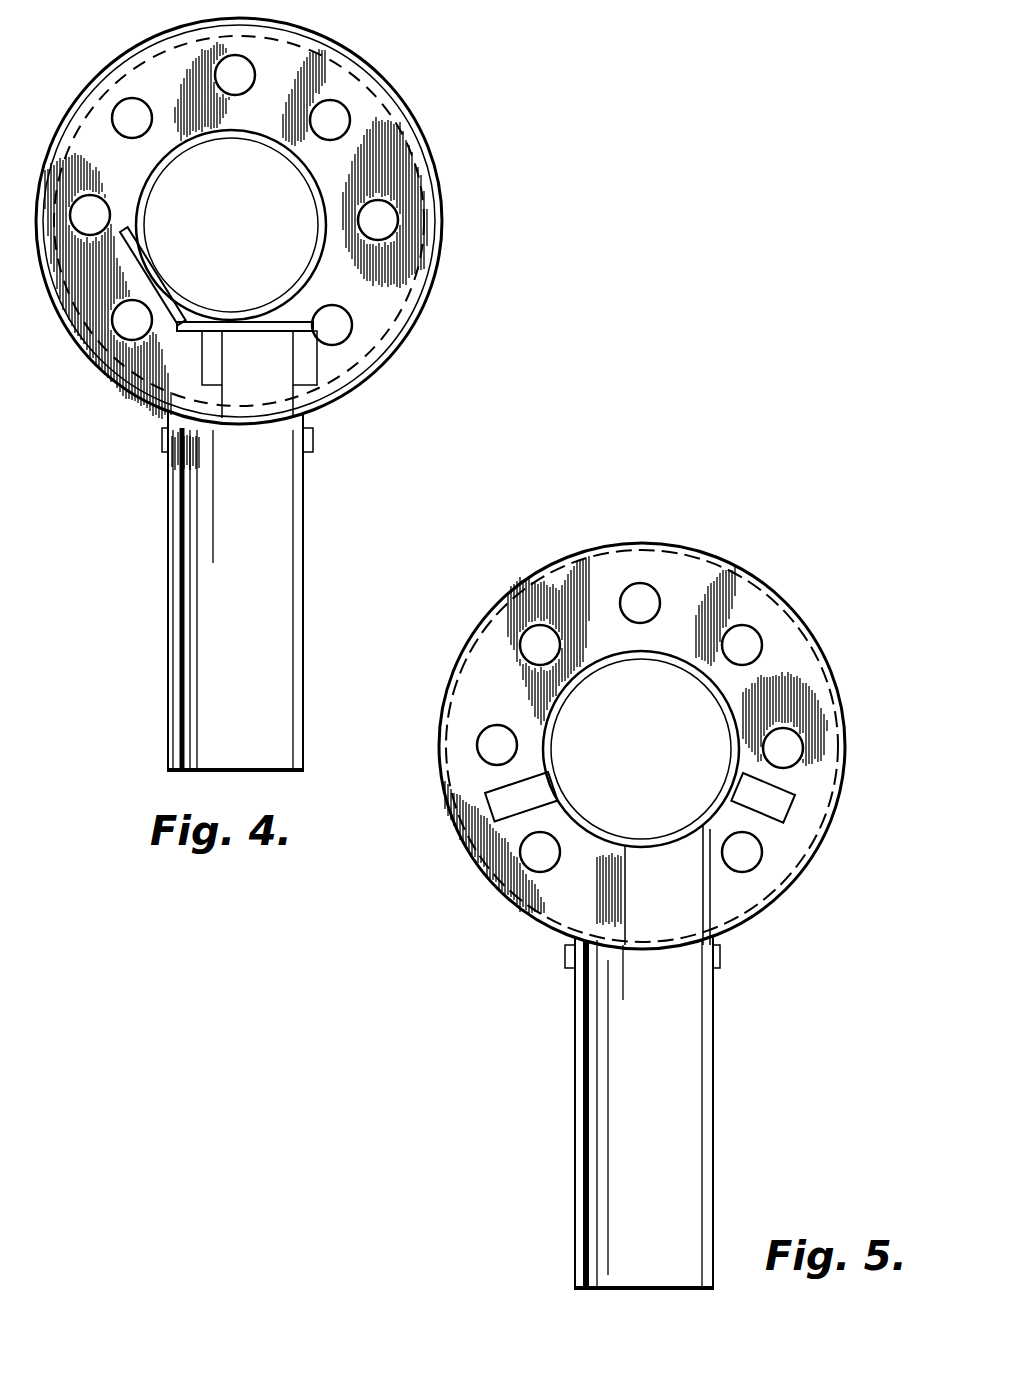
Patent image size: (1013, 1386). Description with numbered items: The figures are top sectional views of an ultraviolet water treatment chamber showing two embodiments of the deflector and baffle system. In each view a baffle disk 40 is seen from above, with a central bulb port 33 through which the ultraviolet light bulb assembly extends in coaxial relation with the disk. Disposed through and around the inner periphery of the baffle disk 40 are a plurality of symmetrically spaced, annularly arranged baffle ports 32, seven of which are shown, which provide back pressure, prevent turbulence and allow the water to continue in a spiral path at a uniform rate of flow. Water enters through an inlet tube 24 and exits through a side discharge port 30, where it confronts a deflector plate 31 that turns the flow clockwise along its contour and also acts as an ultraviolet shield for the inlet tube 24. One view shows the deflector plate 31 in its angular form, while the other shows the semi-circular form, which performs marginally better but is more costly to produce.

In FIG. 4, the inlet tube 24 is at (258, 524).
In FIG. 5, the inlet tube 24 is at (660, 1061).
In FIG. 4, the side discharge port 30 is at (217, 390).
In FIG. 5, the side discharge port 30 is at (625, 912).
In FIG. 4, the deflector plate 31 is at (132, 257).
In FIG. 5, the deflector plate 31 is at (593, 842).
In FIG. 4, the baffle ports 32 is at (244, 84).
In FIG. 5, the baffle ports 32 is at (649, 612).
In FIG. 4, the bulb port 33 is at (247, 224).
In FIG. 5, the bulb port 33 is at (640, 754).
In FIG. 4, the baffle disk 40 is at (378, 120).
In FIG. 5, the baffle disk 40 is at (757, 608).